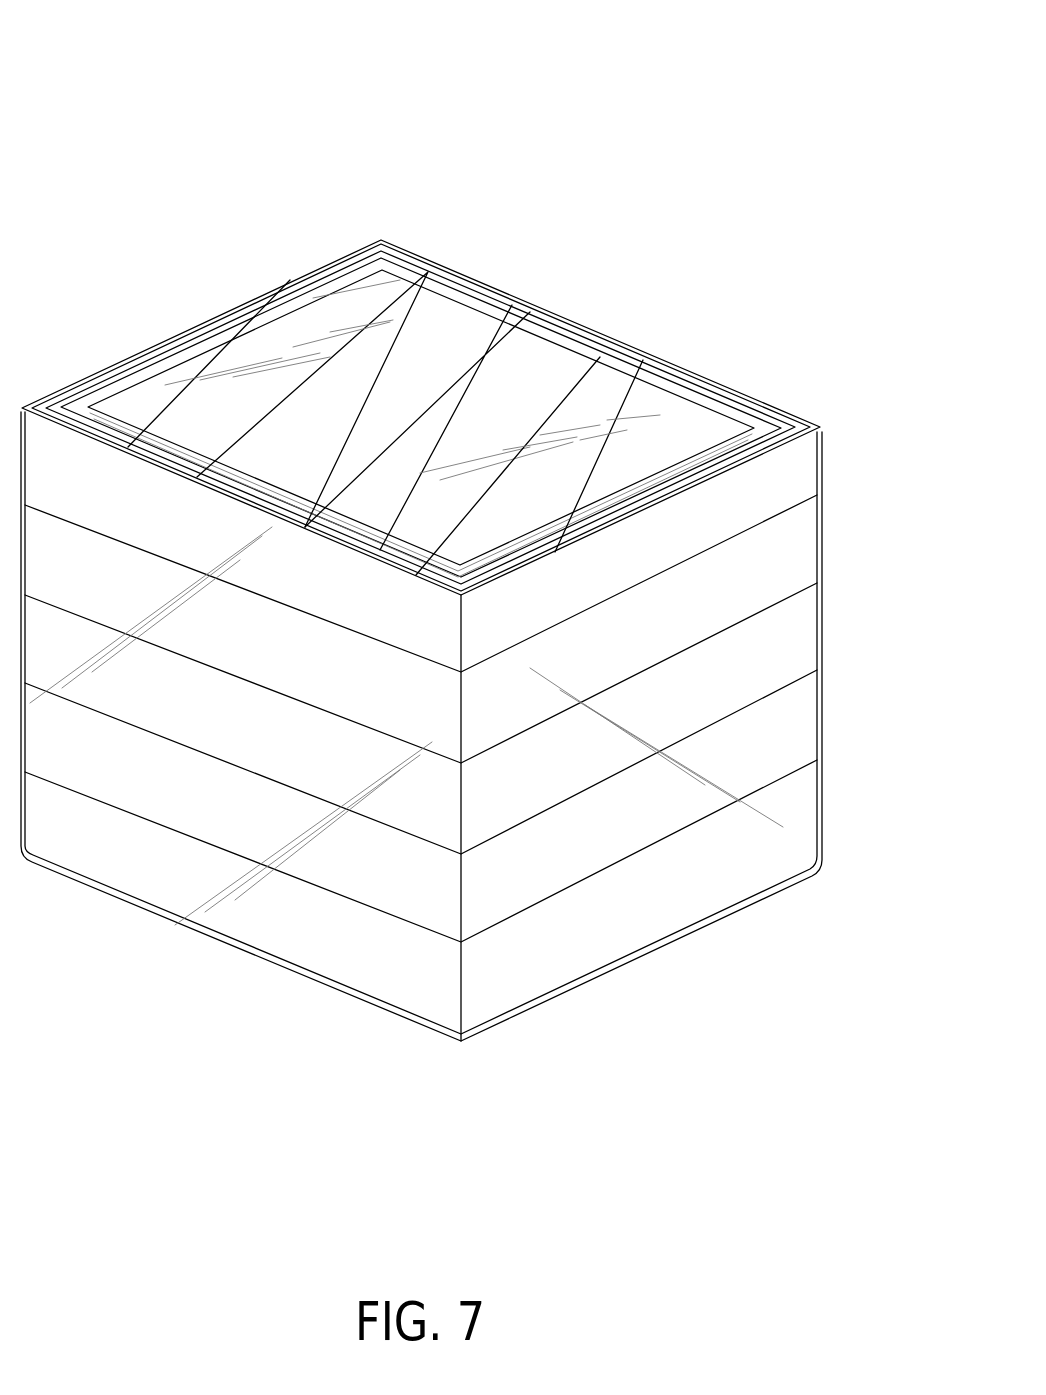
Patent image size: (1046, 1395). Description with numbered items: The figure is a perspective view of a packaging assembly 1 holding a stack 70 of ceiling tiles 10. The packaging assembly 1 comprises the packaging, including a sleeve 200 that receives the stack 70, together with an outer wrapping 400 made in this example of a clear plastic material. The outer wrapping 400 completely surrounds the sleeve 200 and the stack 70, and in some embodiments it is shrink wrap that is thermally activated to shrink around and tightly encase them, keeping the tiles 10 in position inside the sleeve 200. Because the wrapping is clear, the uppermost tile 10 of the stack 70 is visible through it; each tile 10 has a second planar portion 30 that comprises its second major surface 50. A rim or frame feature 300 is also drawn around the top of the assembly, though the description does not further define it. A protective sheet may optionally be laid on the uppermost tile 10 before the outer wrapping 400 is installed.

The packaging assembly 1 is at (763, 166).
The ceiling tile 10 is at (552, 342).
The second planar portion 30 is at (92, 406).
The second major surface 50 is at (393, 290).
The stack 70 is at (447, 340).
The sleeve 200 is at (778, 402).
The rim frame 300 is at (682, 362).
The outer wrapping 400 is at (153, 340).